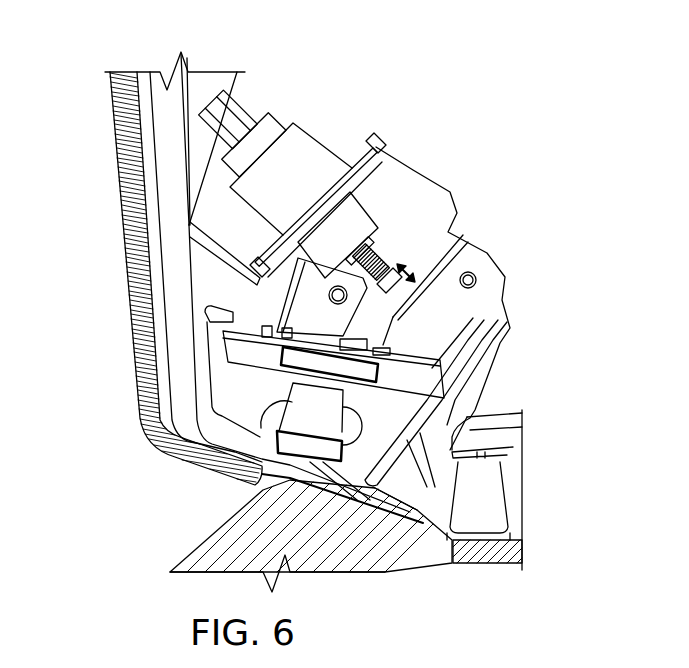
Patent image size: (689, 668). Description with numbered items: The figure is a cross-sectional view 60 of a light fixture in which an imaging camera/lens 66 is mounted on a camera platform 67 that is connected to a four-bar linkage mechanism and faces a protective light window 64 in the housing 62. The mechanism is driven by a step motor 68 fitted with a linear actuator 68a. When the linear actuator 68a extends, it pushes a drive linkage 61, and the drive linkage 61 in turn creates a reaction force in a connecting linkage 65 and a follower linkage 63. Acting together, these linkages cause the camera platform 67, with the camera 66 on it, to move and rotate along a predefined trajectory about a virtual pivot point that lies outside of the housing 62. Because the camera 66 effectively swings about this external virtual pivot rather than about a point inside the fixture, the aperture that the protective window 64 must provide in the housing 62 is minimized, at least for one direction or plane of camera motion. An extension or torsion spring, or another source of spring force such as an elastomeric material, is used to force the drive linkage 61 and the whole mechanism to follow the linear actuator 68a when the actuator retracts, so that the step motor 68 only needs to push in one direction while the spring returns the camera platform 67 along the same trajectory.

The cross-sectional view 60 is at (338, 52).
The drive linkage 61 is at (492, 290).
The housing 62 is at (140, 430).
The follower linkage 63 is at (280, 307).
The protective light window 64 is at (420, 508).
The connecting linkage 65 is at (370, 430).
The imaging camera/lens 66 is at (225, 472).
The camera platform 67 is at (262, 336).
The step motor 68 is at (312, 163).
The linear actuator 68a is at (396, 263).